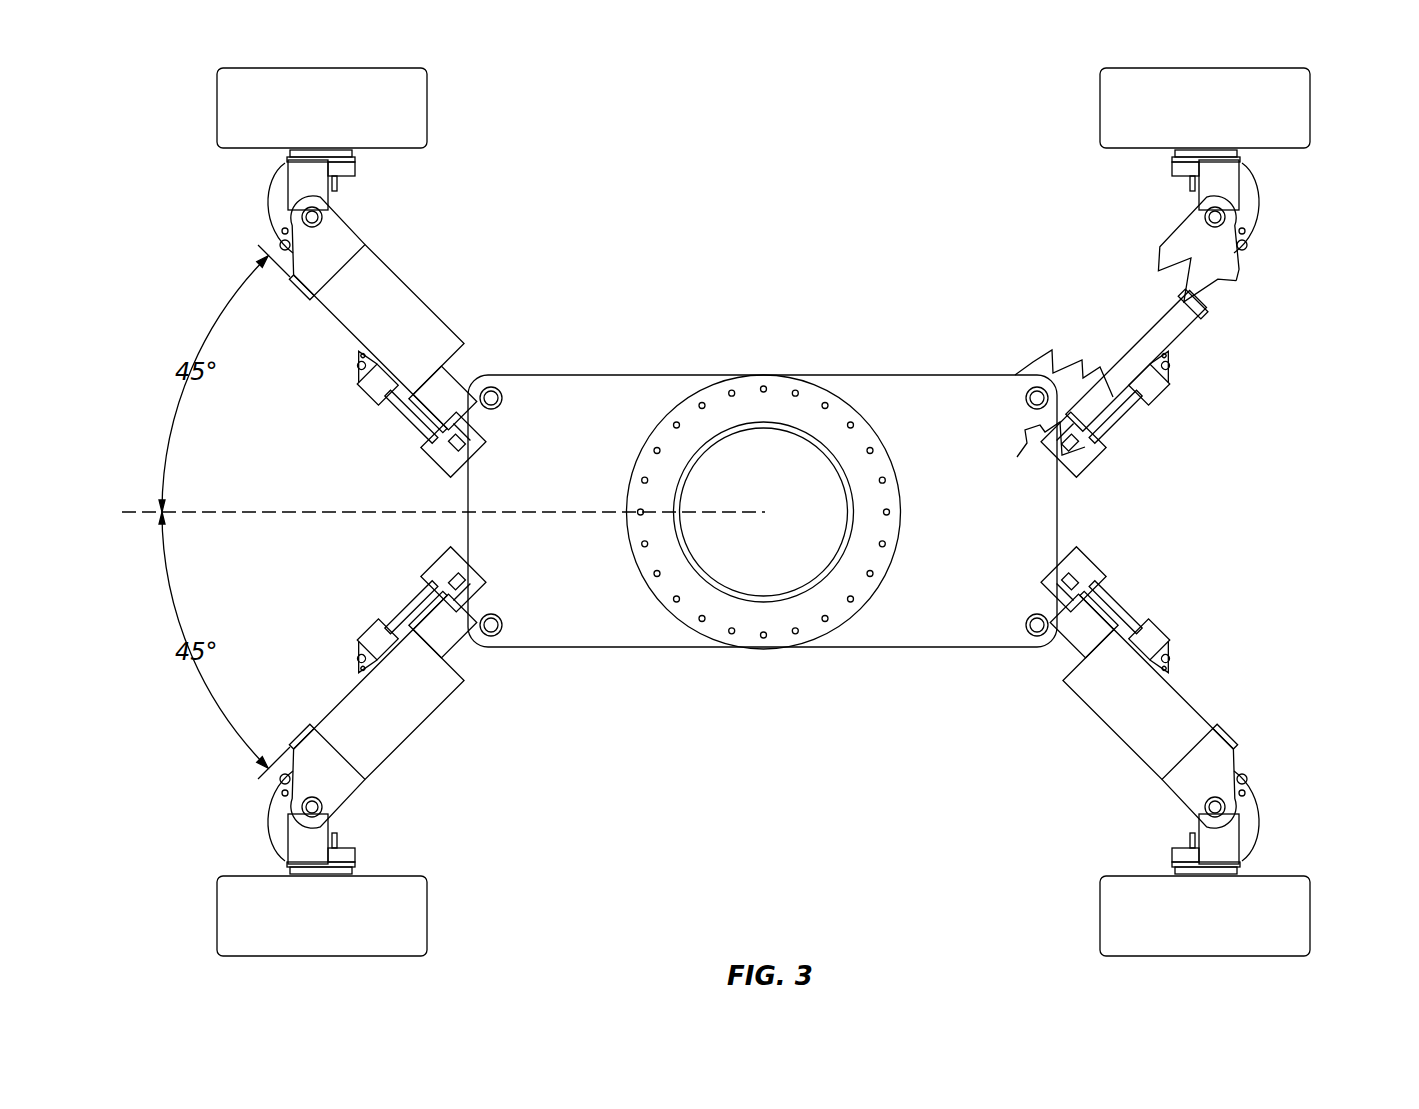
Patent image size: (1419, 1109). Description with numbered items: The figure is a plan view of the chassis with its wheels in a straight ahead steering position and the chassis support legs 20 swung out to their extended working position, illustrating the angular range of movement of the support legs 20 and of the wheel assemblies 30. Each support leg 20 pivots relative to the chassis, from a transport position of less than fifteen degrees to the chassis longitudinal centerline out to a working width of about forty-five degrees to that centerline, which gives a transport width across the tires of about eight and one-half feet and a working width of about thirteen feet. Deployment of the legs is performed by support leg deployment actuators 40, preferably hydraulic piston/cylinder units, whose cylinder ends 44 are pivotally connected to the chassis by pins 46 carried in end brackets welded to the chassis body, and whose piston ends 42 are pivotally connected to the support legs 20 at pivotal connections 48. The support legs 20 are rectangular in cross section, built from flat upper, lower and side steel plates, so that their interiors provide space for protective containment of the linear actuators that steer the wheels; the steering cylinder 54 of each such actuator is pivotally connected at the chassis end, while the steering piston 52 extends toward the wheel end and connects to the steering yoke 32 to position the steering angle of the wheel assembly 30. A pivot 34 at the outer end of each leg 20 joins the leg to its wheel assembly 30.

The chassis support leg 20 is at (407, 290).
The wheel assembly 30 is at (1310, 108).
The steering yoke 32 is at (1258, 210).
The pivot 34 is at (322, 213).
The support leg deployment actuator 40 is at (1130, 430).
The piston end 42 is at (398, 413).
The cylinder end 44 is at (430, 453).
The pin 46 is at (502, 397).
The pivotal connection of piston end to support leg 48 is at (1175, 667).
The steering piston 52 is at (1205, 303).
The steering cylinder 54 is at (1192, 318).